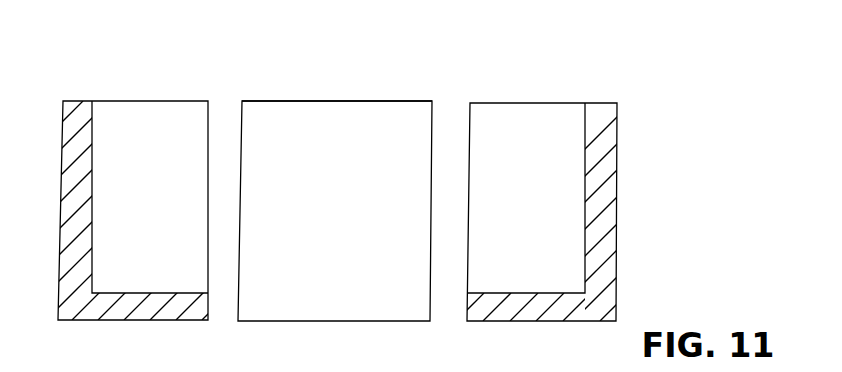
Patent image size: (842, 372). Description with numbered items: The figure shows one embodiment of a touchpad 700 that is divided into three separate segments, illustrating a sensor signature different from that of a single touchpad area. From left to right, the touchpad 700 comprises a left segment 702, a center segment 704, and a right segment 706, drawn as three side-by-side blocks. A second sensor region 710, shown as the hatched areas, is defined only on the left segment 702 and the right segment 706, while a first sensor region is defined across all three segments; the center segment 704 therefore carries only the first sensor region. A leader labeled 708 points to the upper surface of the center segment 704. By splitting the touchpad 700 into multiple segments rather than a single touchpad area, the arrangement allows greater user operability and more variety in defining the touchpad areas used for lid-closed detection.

The touchpad 700 is at (682, 116).
The left segment 702 is at (136, 160).
The center segment 704 is at (314, 160).
The right segment 706 is at (514, 162).
The bonding surface 708 is at (376, 115).
The second sensor region 710 is at (68, 272).